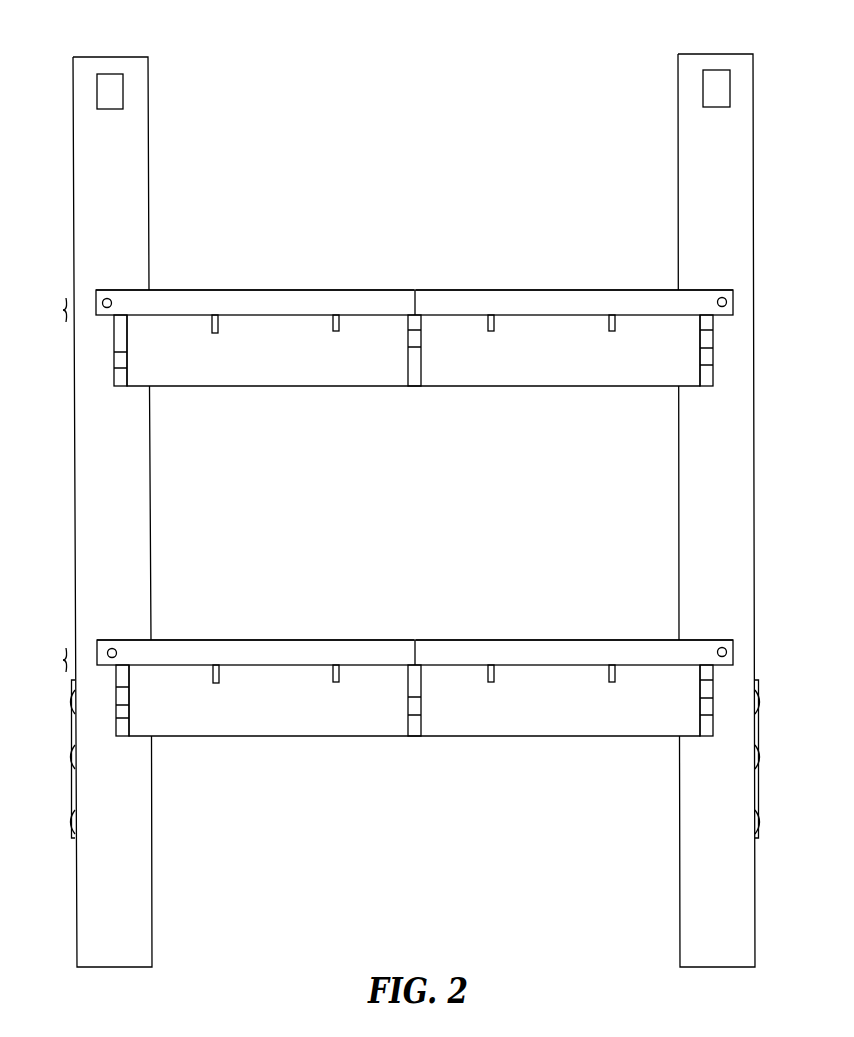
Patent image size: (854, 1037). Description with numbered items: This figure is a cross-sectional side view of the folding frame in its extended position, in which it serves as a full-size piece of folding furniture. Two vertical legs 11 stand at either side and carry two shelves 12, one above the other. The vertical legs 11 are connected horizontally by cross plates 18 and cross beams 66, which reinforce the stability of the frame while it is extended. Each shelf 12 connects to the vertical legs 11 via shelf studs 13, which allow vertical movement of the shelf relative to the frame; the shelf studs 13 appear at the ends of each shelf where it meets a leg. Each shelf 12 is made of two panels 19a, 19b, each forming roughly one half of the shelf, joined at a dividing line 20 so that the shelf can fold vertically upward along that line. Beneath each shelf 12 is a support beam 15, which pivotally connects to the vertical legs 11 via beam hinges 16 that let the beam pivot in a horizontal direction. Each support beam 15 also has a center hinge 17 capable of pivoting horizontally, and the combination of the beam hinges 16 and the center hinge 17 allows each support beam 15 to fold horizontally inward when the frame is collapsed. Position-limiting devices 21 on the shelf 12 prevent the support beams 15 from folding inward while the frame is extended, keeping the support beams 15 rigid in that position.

The vertical leg 11 is at (148, 57).
The cross beam 66 is at (123, 100).
The shelf 12 is at (60, 310).
The shelf stud 13 is at (104, 300).
The support beam 15 is at (270, 357).
The beam hinge 16 is at (120, 358).
The center hinge 17 is at (412, 355).
The cross plate 18 is at (72, 795).
The panel 19a is at (288, 290).
The panel 19b is at (560, 288).
The dividing line 20 is at (416, 290).
The position-limiting device 21 is at (215, 333).